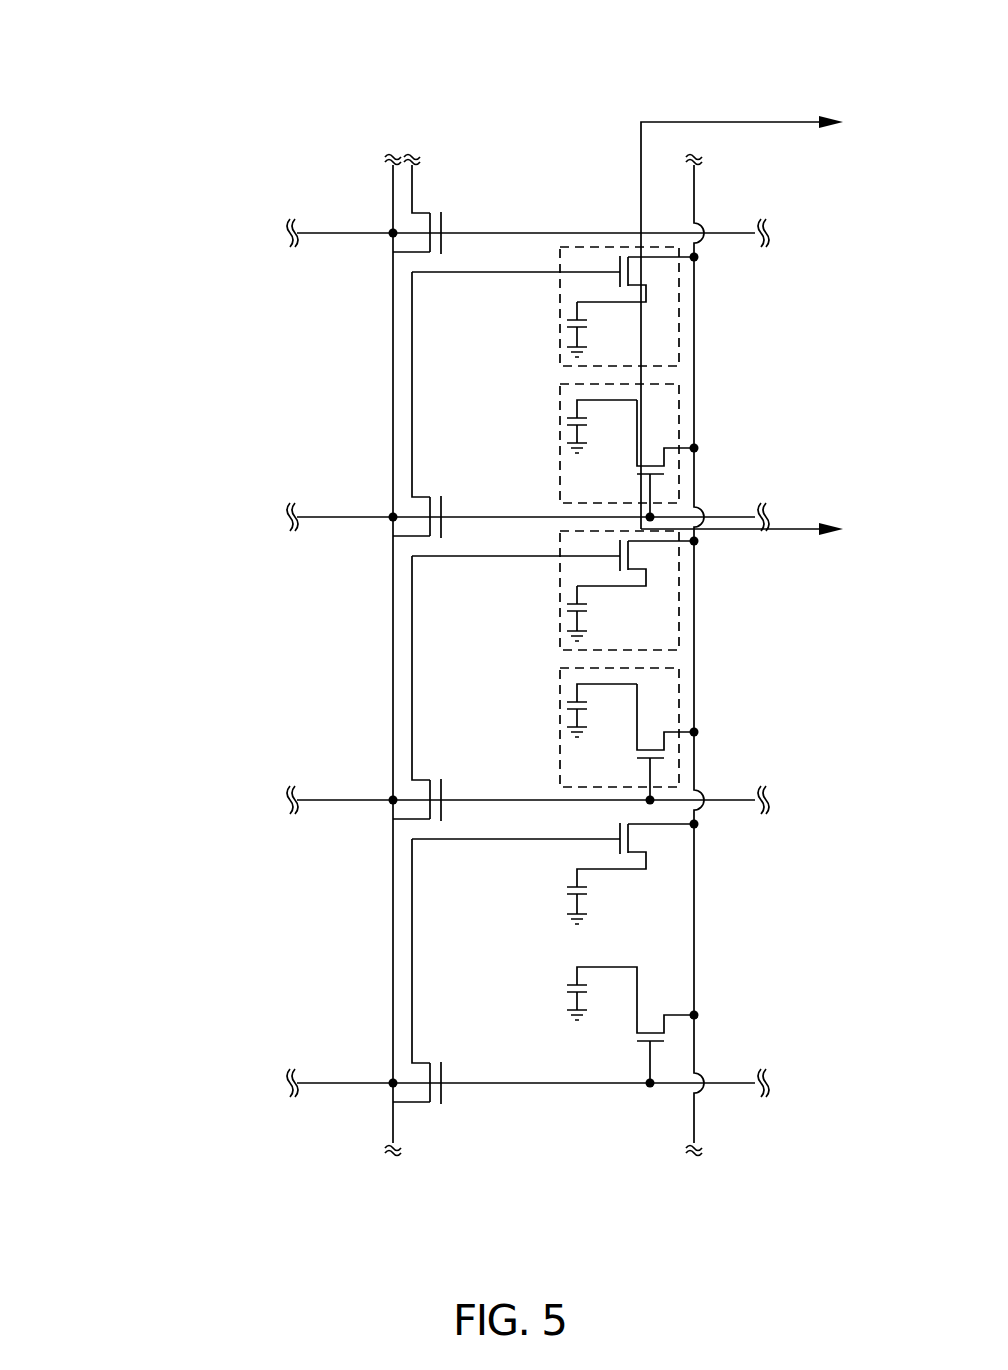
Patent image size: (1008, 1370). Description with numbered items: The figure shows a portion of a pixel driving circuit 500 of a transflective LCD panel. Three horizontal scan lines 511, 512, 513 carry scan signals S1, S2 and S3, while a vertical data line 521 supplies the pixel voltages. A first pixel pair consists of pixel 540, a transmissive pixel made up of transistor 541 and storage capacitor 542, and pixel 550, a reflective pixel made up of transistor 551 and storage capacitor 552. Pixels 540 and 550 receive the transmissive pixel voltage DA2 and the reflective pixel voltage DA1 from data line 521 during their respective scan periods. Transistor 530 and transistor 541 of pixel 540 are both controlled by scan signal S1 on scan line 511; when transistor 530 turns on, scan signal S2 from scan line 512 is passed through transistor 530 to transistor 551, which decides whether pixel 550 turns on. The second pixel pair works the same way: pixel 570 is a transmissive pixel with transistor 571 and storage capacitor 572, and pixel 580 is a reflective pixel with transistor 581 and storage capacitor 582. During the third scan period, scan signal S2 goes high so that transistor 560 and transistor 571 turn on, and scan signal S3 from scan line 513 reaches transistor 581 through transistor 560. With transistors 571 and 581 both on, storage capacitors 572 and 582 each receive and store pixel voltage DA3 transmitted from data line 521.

The pixel circuit 500 is at (145, 94).
The scan line 511 is at (339, 514).
The scan line 512 is at (339, 797).
The scan line 513 is at (339, 1080).
The data line 521 is at (697, 178).
The transistor 530 is at (426, 497).
The pixel 540 is at (558, 400).
The transistor 541 is at (640, 475).
The storage capacitor 542 is at (566, 430).
The pixel 550 is at (558, 303).
The transistor 551 is at (619, 261).
The storage capacitor 552 is at (566, 333).
The transistor 560 is at (426, 780).
The pixel 570 is at (682, 685).
The transistor 571 is at (644, 758).
The storage capacitor 572 is at (566, 712).
The pixel 580 is at (682, 586).
The transistor 581 is at (618, 544).
The storage capacitor 582 is at (566, 615).